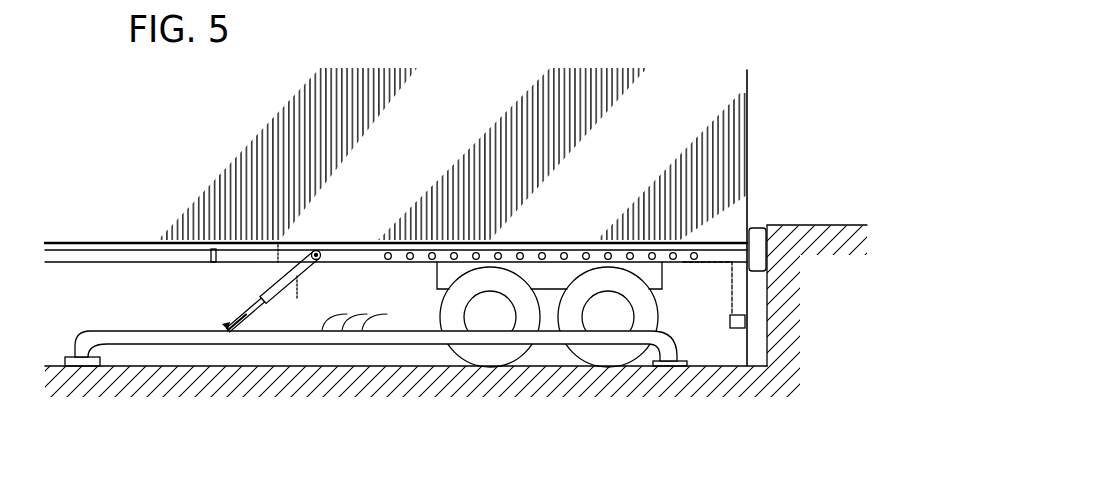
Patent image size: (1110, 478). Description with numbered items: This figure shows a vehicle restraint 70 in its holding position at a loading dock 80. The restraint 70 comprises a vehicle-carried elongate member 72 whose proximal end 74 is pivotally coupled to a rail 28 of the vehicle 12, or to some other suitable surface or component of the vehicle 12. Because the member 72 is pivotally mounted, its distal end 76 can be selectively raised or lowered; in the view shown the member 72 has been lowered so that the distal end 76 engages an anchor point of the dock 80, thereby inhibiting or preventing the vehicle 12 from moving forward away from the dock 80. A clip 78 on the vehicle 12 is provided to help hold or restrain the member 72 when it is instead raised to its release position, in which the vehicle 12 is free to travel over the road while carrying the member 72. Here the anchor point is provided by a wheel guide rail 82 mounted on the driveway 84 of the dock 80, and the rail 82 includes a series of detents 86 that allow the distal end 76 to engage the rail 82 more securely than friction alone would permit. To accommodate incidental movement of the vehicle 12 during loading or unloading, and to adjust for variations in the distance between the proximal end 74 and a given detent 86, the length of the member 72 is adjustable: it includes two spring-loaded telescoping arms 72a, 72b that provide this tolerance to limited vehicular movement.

The vehicle 12 is at (749, 142).
The rail 28 is at (683, 265).
The restraint 70 is at (152, 168).
The elongate member 72 is at (272, 292).
The spring-loaded telescoping arm 72a is at (248, 313).
The spring-loaded telescoping arm 72b is at (279, 241).
The proximal end 74 is at (322, 258).
The distal end 76 is at (227, 326).
The clip 78 is at (212, 260).
The loading dock 80 is at (833, 295).
The wheel guide rail 82 is at (130, 329).
The driveway 84 is at (703, 366).
The detents 86 is at (387, 314).